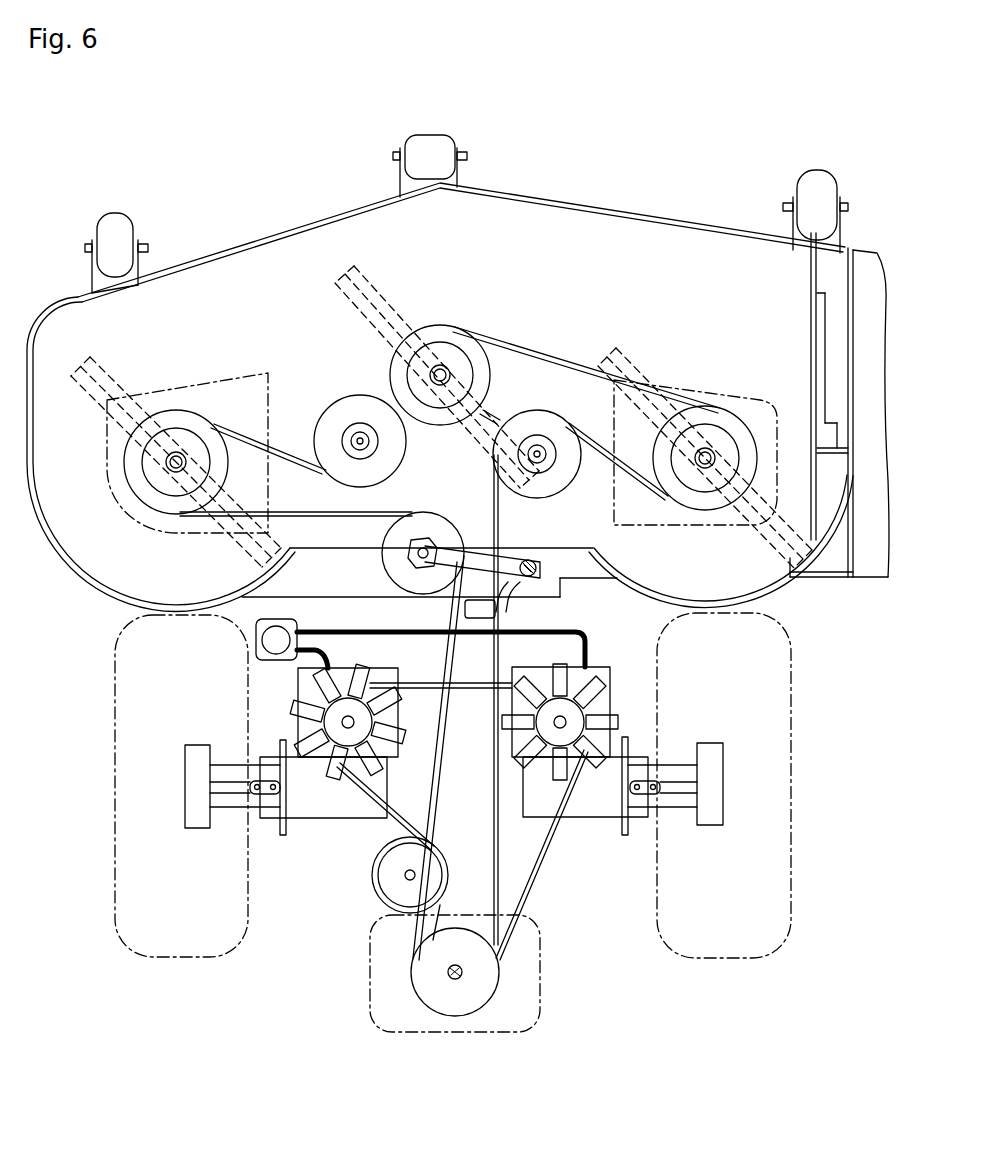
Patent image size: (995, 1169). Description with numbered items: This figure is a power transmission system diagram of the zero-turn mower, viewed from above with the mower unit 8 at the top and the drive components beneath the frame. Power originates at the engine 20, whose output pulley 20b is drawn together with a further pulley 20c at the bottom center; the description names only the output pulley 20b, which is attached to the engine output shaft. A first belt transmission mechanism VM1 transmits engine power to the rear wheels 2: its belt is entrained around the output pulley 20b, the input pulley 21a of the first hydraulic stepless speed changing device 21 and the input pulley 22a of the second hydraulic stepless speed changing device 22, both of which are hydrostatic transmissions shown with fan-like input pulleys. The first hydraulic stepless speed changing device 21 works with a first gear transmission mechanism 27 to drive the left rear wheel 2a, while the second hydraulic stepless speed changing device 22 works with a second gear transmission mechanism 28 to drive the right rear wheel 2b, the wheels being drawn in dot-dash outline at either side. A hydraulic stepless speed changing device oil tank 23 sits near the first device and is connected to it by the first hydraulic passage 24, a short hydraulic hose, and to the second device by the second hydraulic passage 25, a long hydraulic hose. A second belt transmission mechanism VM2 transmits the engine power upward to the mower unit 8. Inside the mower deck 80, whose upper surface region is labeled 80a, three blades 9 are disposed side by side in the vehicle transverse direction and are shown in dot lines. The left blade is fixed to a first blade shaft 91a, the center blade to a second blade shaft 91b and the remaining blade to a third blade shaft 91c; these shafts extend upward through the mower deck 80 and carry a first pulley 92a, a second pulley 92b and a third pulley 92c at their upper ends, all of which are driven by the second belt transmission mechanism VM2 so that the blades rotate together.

The mower unit 8 is at (458, 373).
The mower deck 80 is at (236, 243).
The deck top plate 80a is at (585, 257).
The blade 9 is at (118, 370).
The first blade shaft 91a is at (170, 462).
The second blade shaft 91b is at (435, 378).
The third blade shaft 91c is at (700, 470).
The first pulley 92a is at (182, 412).
The second pulley 92b is at (453, 333).
The third pulley 92c is at (735, 415).
The second hydraulic passage 25 is at (318, 626).
The second belt transmission mechanism VM2 is at (448, 607).
The hydraulic stepless speed changing device oil tank 23 is at (255, 640).
The first hydraulic passage 24 is at (335, 655).
The first hydraulic stepless speed changing device 21 is at (303, 680).
The input pulley 21a is at (330, 714).
The second hydraulic stepless speed changing device 22 is at (606, 678).
The input pulley 22a is at (577, 715).
The first gear transmission mechanism 27 is at (310, 806).
The second gear transmission mechanism 28 is at (598, 808).
The first belt transmission mechanism VM1 is at (396, 826).
The engine 20 is at (415, 1035).
The output pulley 20b is at (457, 1010).
The engine output pulley 20c is at (455, 972).
The rear wheels 2 is at (453, 829).
The left rear wheel 2a is at (183, 957).
The right rear wheel 2b is at (722, 958).